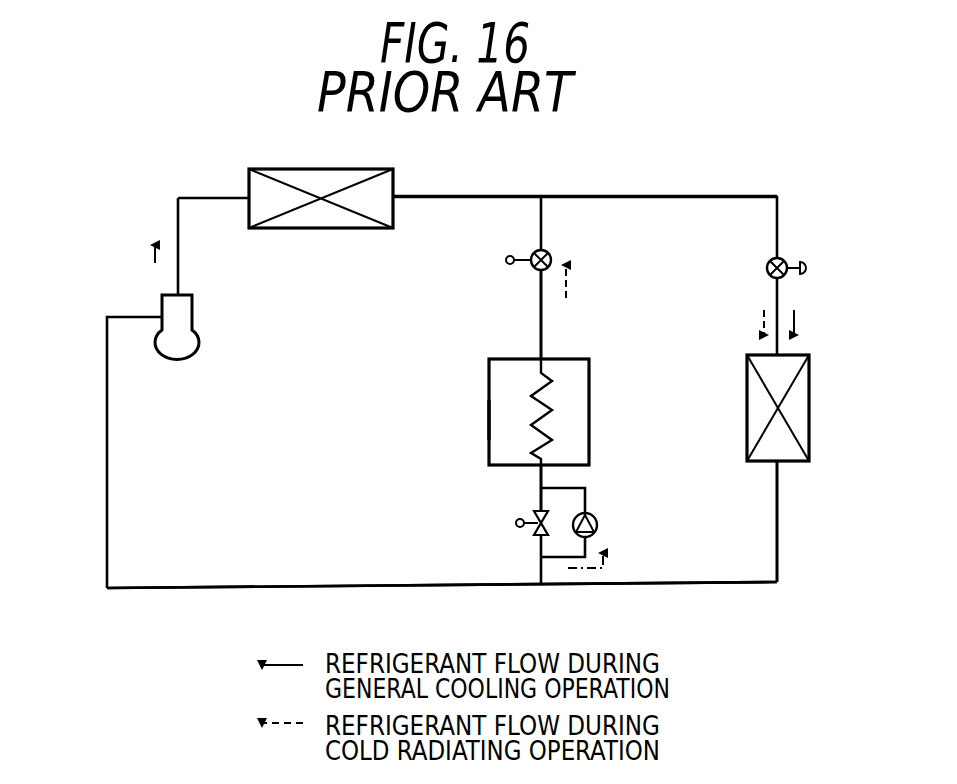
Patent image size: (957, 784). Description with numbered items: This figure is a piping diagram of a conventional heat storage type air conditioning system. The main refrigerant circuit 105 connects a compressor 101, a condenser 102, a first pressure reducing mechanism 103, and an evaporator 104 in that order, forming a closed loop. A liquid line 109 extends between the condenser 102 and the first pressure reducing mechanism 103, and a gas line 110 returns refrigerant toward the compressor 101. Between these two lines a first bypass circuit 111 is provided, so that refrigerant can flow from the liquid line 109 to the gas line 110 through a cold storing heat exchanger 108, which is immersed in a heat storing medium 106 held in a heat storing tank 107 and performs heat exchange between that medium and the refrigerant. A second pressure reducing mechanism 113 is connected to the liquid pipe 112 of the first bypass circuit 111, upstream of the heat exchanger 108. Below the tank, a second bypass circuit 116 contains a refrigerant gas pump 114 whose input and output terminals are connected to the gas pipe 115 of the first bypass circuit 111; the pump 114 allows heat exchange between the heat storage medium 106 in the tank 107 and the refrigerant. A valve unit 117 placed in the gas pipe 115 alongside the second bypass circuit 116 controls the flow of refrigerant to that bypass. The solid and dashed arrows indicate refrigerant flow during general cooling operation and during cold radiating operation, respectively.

The compressor 101 is at (200, 342).
The condenser 102 is at (317, 228).
The first pressure reducing mechanism 103 is at (765, 268).
The evaporator 104 is at (747, 418).
The main refrigerant circuit 105 is at (245, 588).
The heat storing medium 106 is at (578, 386).
The heat storing tank 107 is at (489, 435).
The cold storing heat exchanger 108 is at (535, 390).
The liquid line 109 is at (663, 195).
The gas line 110 is at (703, 582).
The first bypass circuit 111 is at (541, 233).
The liquid pipe 112 is at (541, 325).
The second pressure reducing mechanism 113 is at (505, 262).
The refrigerant gas pump 114 is at (598, 521).
The gas pipe 115 is at (540, 481).
The second bypass circuit 116 is at (587, 490).
The valve unit 117 is at (512, 523).